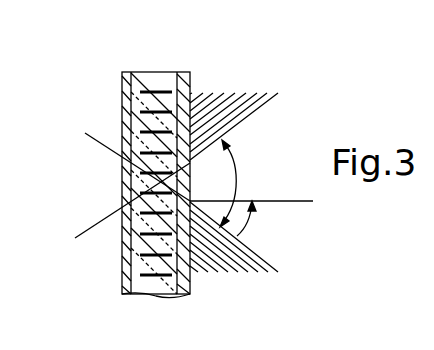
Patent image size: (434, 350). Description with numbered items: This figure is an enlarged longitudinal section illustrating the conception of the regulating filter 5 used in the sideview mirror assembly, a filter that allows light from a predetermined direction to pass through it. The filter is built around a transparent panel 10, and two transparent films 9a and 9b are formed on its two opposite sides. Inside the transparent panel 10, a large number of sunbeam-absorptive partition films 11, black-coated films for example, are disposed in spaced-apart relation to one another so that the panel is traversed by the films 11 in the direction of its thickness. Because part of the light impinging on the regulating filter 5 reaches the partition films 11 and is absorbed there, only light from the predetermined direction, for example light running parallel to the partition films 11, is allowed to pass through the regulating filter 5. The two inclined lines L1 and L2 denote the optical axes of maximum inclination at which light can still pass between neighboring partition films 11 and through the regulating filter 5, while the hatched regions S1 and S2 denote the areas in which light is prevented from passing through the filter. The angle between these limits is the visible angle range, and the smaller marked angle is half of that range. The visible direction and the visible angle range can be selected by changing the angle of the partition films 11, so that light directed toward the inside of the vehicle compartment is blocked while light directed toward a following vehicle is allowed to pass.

The regulating filter 5 is at (181, 64).
The transparent film 9a is at (122, 105).
The transparent film 9b is at (192, 80).
The transparent panel 10 is at (155, 74).
The sunbeam-absorptive partition films 11 is at (142, 98).
The optical axis of maximum inclination L1 is at (87, 226).
The optical axis of maximum inclination L2 is at (90, 137).
The area where light is prevented from passing S1 is at (238, 110).
The area where light is prevented from passing S2 is at (235, 263).